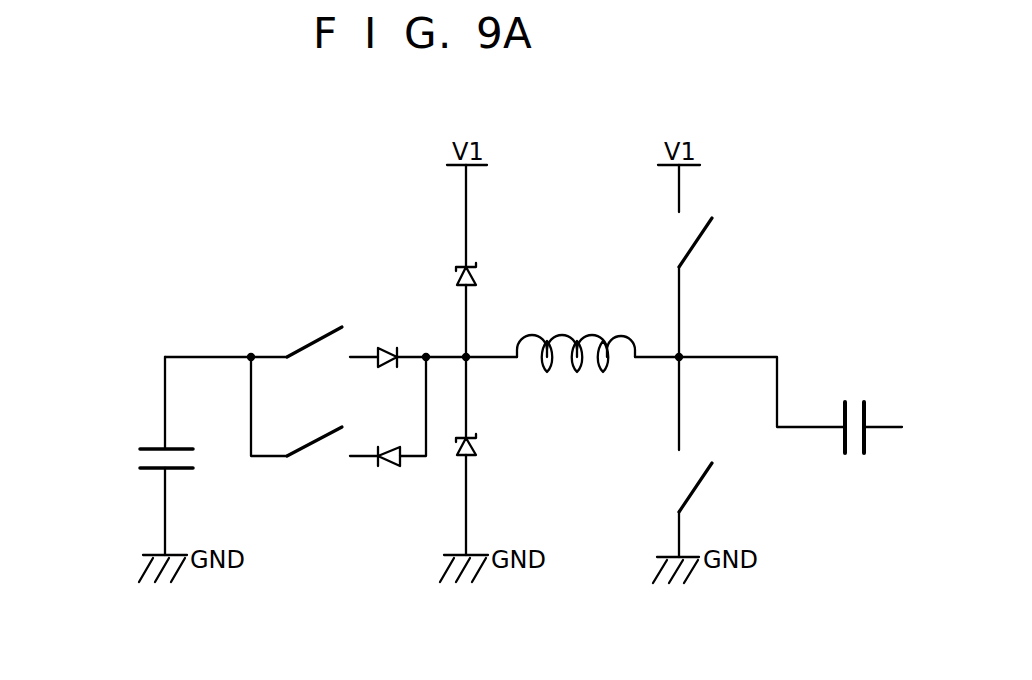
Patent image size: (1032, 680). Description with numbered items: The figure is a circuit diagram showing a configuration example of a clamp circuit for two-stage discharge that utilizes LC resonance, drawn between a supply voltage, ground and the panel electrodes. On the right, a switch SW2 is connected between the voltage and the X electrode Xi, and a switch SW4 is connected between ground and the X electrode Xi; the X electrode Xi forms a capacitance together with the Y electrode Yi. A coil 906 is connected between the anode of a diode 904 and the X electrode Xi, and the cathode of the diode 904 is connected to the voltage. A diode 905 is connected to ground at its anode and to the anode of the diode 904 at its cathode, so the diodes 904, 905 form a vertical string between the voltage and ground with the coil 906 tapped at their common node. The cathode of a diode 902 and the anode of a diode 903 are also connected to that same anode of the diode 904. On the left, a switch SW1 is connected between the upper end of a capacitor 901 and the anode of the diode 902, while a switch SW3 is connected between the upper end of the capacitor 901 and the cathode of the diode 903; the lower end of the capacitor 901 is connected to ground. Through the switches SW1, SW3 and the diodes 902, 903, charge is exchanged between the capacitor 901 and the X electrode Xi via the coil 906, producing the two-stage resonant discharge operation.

The capacitor 901 is at (138, 453).
The diode 902 is at (390, 348).
The diode 903 is at (390, 467).
The diode 904 is at (476, 270).
The diode 905 is at (476, 441).
The coil 906 is at (577, 372).
The switch SW1 is at (319, 327).
The switch SW2 is at (690, 240).
The switch SW3 is at (322, 474).
The switch SW4 is at (690, 487).
The X electrode Xi is at (843, 413).
The Y electrode Yi is at (866, 414).